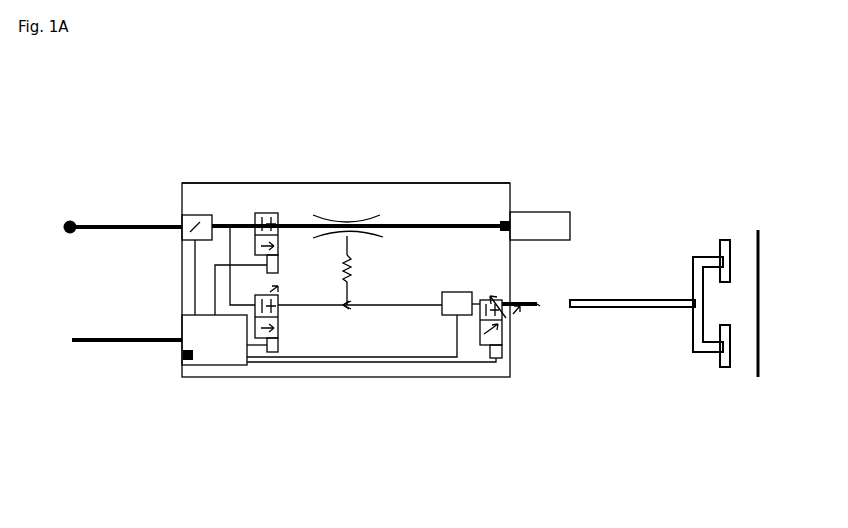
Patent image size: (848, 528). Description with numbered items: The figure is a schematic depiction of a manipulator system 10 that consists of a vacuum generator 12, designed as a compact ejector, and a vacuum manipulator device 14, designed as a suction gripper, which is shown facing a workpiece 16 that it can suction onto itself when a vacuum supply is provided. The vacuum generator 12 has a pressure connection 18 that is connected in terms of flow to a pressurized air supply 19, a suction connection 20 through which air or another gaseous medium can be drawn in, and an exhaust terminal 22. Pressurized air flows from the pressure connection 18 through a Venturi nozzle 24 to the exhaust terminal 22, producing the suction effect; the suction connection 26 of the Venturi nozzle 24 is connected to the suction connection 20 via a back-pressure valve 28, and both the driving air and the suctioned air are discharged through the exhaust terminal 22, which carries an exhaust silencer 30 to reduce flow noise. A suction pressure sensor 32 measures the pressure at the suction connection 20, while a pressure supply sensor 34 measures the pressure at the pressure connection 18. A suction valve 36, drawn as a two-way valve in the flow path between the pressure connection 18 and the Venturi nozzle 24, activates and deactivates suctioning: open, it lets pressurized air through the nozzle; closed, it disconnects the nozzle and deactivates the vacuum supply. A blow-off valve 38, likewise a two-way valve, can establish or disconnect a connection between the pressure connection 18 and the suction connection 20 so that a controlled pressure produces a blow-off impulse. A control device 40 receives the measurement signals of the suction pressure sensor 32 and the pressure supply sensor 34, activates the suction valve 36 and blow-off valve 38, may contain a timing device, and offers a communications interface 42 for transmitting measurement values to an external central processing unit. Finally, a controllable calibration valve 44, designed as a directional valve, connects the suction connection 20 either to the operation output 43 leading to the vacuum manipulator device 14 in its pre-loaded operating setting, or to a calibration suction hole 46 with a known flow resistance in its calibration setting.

The manipulator system 10 is at (535, 98).
The vacuum generator 12 is at (160, 128).
The vacuum manipulator device 14 is at (755, 175).
The workpiece 16 is at (760, 353).
The pressure connection 18 is at (170, 224).
The pressurized air supply 19 is at (64, 236).
The suction connection 20 is at (477, 300).
The exhaust terminal 22 is at (524, 216).
The Venturi nozzle 24 is at (360, 218).
The suction connection for the Venturi nozzle 26 is at (351, 240).
The back-pressure valve 28 is at (355, 270).
The exhaust silencer 30 is at (560, 212).
The suction pressure sensor 32 is at (447, 315).
The pressure supply sensor 34 is at (195, 228).
The suction valve 36 is at (280, 212).
The blow-off valve 38 is at (280, 322).
The control device 40 is at (208, 347).
The communications interface 42 is at (178, 357).
The operation output 43 is at (539, 307).
The calibration valve 44 is at (500, 358).
The calibration suction hole 46 is at (517, 317).